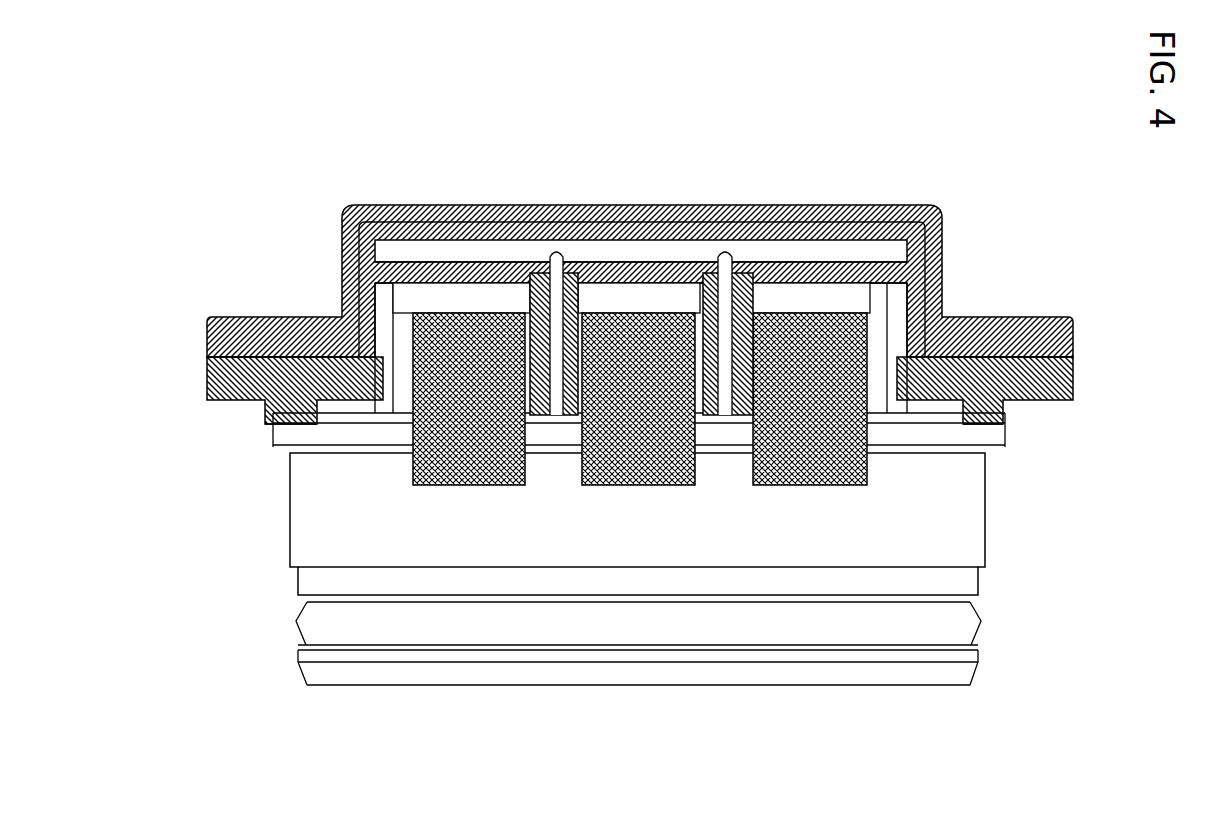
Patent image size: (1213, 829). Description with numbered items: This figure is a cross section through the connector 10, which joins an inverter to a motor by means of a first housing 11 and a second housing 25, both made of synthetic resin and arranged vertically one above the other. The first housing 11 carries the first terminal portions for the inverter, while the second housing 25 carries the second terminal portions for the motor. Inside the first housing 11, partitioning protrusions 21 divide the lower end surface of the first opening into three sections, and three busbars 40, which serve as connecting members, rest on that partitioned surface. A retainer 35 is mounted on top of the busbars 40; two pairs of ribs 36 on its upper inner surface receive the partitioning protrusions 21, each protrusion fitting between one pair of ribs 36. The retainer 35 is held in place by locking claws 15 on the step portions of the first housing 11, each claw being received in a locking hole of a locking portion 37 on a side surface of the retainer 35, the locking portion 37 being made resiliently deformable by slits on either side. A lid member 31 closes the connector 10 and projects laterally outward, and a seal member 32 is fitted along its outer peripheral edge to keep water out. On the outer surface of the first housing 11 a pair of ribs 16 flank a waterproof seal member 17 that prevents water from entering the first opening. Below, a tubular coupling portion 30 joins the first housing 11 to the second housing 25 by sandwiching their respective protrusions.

The connector 10 is at (678, 148).
The first housing 11 is at (1073, 385).
The locking claw 15 is at (377, 424).
The rib 16 is at (270, 416).
The waterproof seal member 17 is at (293, 444).
The partitioning protrusion 21 is at (559, 207).
The second housing 25 is at (945, 687).
The coupling portion 30 is at (985, 545).
The lid member 31 is at (798, 207).
The seal member 32 is at (228, 353).
The retainer 35 is at (880, 207).
The rib 36 is at (543, 416).
The locking portion 37 is at (367, 453).
The busbar 40 is at (468, 487).